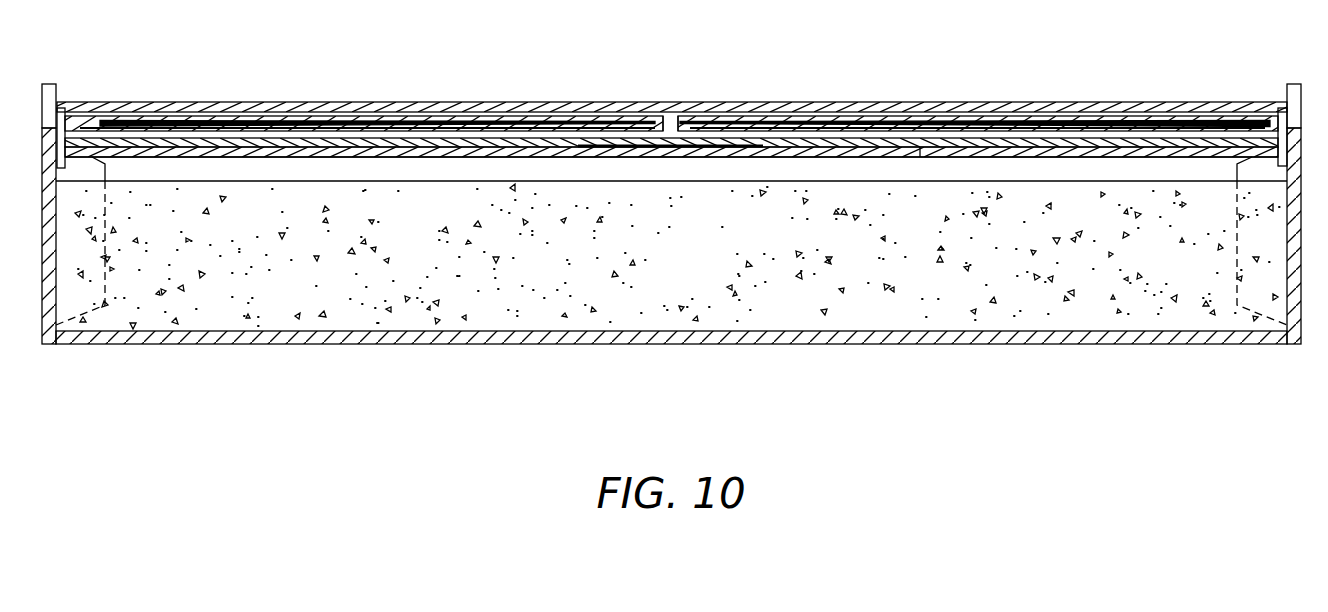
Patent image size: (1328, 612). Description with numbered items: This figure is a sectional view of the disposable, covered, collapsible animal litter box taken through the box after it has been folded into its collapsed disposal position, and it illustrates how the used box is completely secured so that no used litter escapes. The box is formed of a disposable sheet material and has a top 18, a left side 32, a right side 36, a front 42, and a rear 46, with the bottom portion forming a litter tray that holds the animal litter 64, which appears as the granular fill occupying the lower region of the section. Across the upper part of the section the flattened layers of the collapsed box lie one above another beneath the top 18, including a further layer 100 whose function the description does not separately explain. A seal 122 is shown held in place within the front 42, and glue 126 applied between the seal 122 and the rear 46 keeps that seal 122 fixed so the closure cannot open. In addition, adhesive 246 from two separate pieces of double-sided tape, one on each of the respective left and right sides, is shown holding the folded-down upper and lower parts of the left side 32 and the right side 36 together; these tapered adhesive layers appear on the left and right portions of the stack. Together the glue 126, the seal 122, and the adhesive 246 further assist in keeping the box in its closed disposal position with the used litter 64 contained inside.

The top 18 is at (350, 106).
The adhesive 246 is at (218, 127).
The left side 32 is at (653, 122).
The right side 36 is at (692, 122).
The rear 46 is at (672, 140).
The adhesive layer 100 is at (426, 153).
The seal 122 is at (502, 153).
The glue 126 is at (687, 150).
The front 42 is at (222, 155).
The animal litter 64 is at (442, 267).